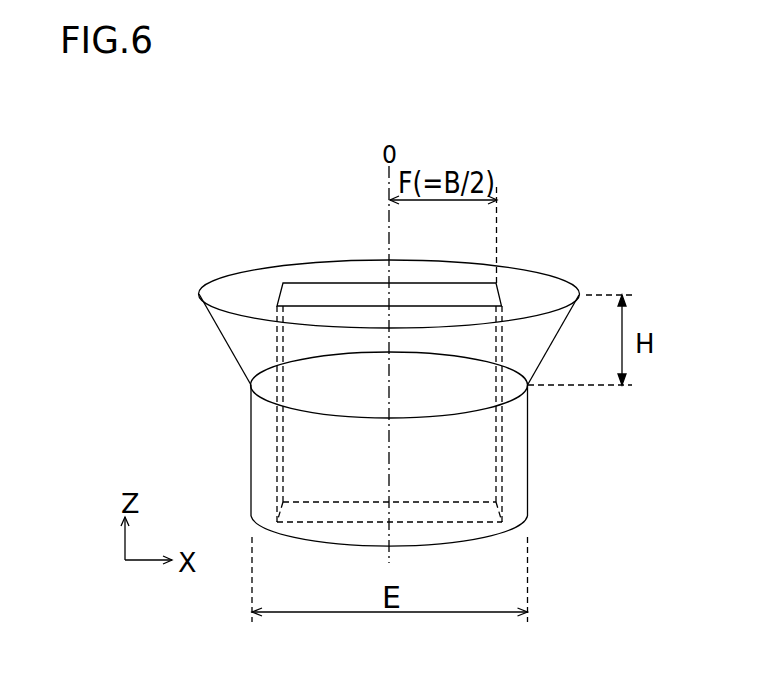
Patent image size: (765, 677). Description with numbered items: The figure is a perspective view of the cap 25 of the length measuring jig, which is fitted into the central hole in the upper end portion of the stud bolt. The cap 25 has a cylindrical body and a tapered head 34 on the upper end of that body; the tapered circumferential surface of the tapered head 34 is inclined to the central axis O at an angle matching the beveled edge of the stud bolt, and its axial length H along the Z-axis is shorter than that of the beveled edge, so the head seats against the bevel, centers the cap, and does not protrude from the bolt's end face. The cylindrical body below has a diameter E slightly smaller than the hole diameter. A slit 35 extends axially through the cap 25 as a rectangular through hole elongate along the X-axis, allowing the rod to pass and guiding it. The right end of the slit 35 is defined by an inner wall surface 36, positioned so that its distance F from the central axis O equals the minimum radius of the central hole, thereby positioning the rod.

The cap 25 is at (307, 262).
The tapered head 34 is at (223, 340).
The slit 35 is at (358, 295).
The inner wall surface 36 is at (497, 297).